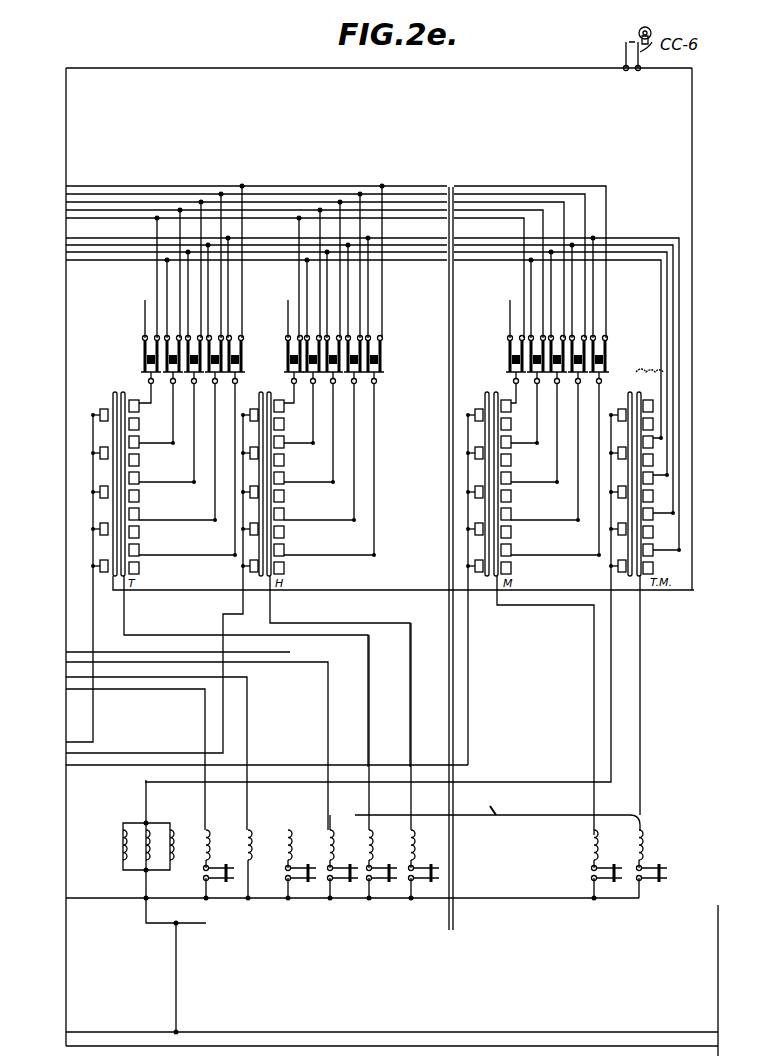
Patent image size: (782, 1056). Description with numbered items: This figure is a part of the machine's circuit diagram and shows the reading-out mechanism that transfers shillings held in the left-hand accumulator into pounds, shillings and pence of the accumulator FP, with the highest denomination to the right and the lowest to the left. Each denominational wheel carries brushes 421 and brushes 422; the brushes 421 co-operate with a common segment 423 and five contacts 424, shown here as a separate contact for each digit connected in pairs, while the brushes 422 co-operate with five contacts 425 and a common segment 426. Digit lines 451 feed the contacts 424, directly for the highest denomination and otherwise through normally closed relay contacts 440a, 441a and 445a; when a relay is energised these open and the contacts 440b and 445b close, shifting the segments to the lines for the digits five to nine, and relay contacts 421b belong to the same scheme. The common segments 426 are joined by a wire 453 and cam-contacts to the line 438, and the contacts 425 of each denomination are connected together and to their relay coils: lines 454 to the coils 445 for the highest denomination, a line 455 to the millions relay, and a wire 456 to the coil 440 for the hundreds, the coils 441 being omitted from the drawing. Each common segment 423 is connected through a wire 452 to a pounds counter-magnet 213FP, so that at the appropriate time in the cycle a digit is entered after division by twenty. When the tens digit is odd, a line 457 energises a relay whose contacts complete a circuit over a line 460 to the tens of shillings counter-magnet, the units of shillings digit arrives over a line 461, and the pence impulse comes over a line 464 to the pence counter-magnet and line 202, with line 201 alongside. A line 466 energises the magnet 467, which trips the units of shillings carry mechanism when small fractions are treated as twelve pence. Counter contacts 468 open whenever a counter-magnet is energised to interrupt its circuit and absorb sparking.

The line 438 is at (345, 70).
The lines 451 is at (272, 186).
The wire 453 is at (692, 152).
The line 455 is at (468, 705).
The relay contacts 440a is at (241, 338).
The relay coils 440 is at (255, 362).
The relay contacts 440b is at (244, 364).
The relay contacts 441a is at (383, 345).
The relay coils 441 is at (405, 372).
The relay contacts 421b is at (382, 372).
The relay contacts 445a is at (508, 352).
The relay contacts 445b is at (605, 376).
The relay coils 445 is at (664, 378).
The contacts 424 is at (133, 398).
The common segment 423 is at (115, 392).
The common segment 426 is at (123, 392).
The contacts 425 is at (100, 412).
The brushes 422 is at (130, 492).
The brushes 421 is at (120, 490).
The line 461 is at (290, 652).
The line 460 is at (328, 702).
The wires 452 is at (410, 703).
The lines 454 is at (611, 723).
The line 466 is at (247, 677).
The wire 456 is at (247, 735).
The line 464 is at (140, 689).
The line 457 is at (93, 722).
The magnet 467 is at (255, 835).
The counter-magnets 213FP is at (283, 850).
The counter contacts 468 is at (642, 880).
The line 202 is at (407, 1032).
The line 201 is at (513, 1046).